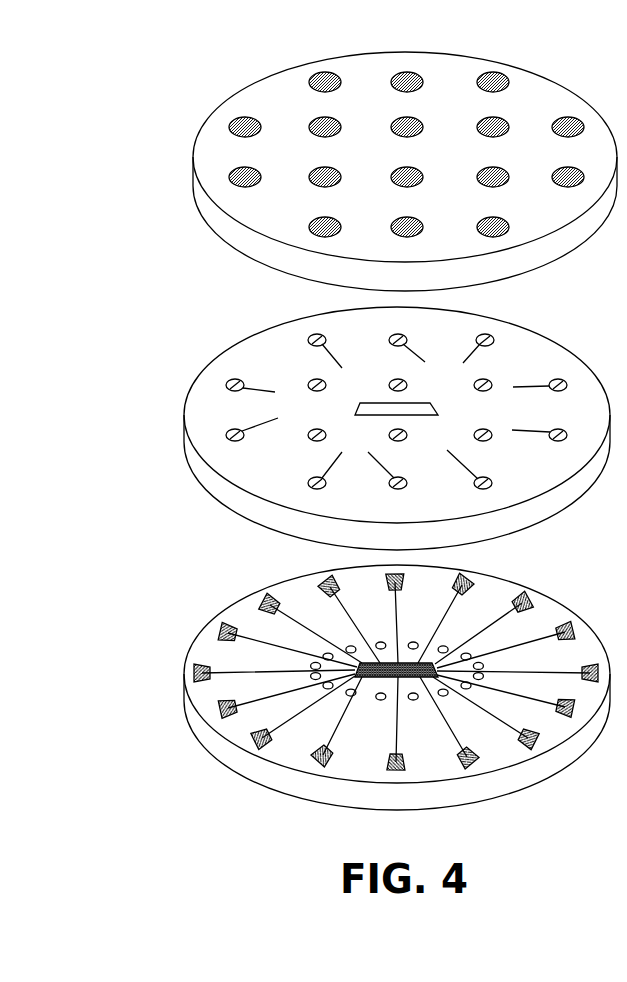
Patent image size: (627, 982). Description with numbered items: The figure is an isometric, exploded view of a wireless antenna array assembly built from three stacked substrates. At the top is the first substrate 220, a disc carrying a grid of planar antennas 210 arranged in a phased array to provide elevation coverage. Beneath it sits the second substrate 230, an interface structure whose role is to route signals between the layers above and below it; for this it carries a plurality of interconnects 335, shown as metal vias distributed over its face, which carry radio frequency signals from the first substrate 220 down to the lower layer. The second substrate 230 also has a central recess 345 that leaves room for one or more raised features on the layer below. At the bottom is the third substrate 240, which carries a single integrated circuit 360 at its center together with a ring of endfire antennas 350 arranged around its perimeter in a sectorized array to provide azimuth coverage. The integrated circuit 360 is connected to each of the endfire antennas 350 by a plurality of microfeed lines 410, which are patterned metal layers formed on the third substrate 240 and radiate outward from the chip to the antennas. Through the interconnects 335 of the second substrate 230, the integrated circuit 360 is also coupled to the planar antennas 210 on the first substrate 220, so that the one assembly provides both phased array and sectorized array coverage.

The planar antennas 210 is at (308, 73).
The first substrate 220 is at (195, 197).
The second substrate 230 is at (197, 463).
The interconnects 335 is at (307, 380).
The recess 345 is at (385, 410).
The third substrate 240 is at (200, 723).
The endfire antennas 350 is at (197, 668).
The integrated circuit 360 is at (357, 675).
The microfeed lines 410 is at (542, 700).